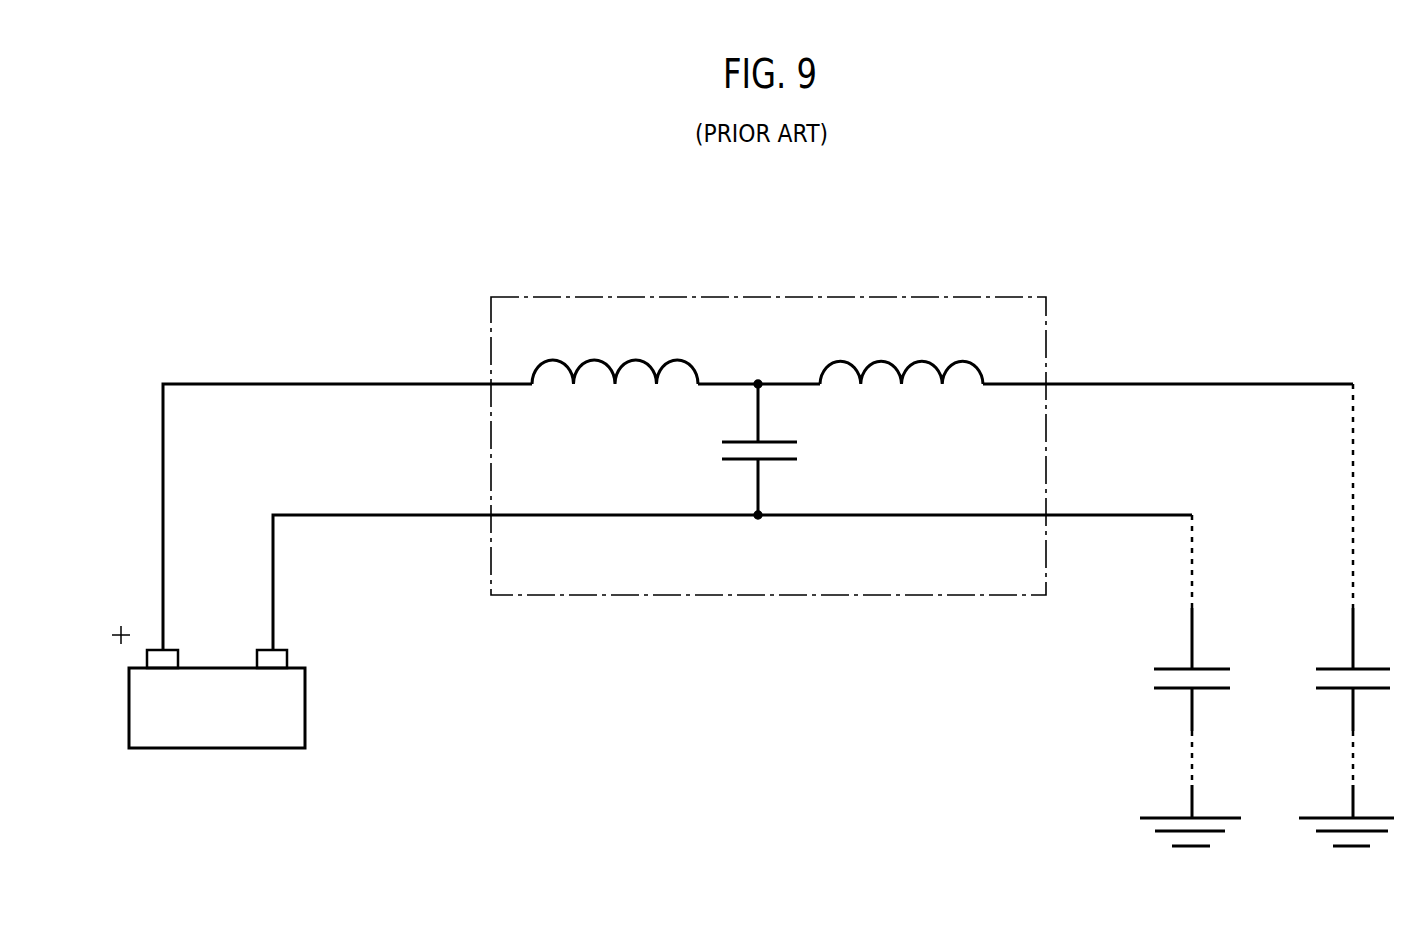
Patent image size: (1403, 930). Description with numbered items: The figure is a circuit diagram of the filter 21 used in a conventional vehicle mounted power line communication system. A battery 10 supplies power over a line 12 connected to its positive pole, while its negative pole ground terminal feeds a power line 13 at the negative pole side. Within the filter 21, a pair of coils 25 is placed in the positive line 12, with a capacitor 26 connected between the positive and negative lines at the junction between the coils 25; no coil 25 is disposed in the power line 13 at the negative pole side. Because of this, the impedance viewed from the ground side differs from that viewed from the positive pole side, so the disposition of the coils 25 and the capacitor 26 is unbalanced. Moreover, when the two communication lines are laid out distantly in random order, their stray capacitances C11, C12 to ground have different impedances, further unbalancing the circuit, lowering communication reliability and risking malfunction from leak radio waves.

The battery 10 is at (228, 749).
The line for power feeding 12 is at (305, 383).
The power line at the negative pole side 13 is at (336, 515).
The filter 21 is at (747, 297).
The coil 25 is at (593, 360).
The capacitor 26 is at (773, 460).
The stray capacitance C11 is at (1188, 680).
The stray capacitance C12 is at (1346, 615).